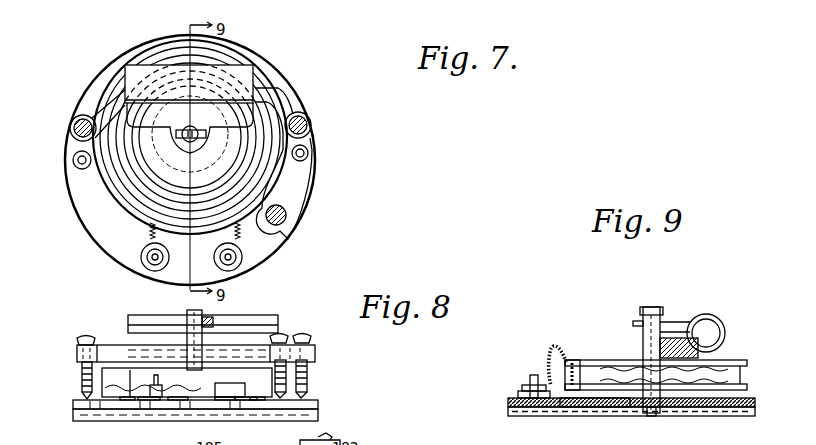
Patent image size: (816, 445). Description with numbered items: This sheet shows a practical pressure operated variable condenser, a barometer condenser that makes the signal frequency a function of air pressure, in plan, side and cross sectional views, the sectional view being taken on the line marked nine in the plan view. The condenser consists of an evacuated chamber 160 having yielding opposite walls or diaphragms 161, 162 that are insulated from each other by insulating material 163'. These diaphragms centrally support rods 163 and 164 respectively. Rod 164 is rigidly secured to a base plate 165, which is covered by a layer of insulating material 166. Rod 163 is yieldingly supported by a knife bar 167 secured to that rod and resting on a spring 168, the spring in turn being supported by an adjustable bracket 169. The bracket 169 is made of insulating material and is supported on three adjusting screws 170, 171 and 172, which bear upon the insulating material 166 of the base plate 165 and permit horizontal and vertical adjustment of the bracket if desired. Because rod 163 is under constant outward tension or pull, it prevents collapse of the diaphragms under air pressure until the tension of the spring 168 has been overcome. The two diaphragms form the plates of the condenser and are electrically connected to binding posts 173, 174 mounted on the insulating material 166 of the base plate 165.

In FIG. 9, the evacuated chamber 160 is at (578, 357).
In FIG. 7, the diaphragm 161 is at (124, 175).
In FIG. 9, the diaphragm 161 is at (610, 360).
In FIG. 9, the diaphragm 162 is at (600, 407).
In FIG. 7, the rod 163 is at (190, 142).
In FIG. 8, the rod 163 is at (171, 334).
In FIG. 9, the rod 163 is at (663, 348).
In FIG. 8, the insulating material 163' is at (152, 385).
In FIG. 9, the insulating material 163' is at (700, 371).
In FIG. 9, the rod 164 is at (651, 413).
In FIG. 8, the base plate 165 is at (320, 413).
In FIG. 9, the base plate 165 is at (510, 413).
In FIG. 7, the insulating material 166 is at (305, 183).
In FIG. 8, the insulating material 166 is at (320, 402).
In FIG. 9, the insulating material 166 is at (508, 402).
In FIG. 7, the knife bar 167 is at (199, 146).
In FIG. 8, the knife bar 167 is at (214, 316).
In FIG. 9, the knife bar 167 is at (640, 316).
In FIG. 7, the spring 168 is at (244, 61).
In FIG. 8, the spring 168 is at (260, 306).
In FIG. 9, the spring 168 is at (709, 314).
In FIG. 7, the adjustable bracket 169 is at (277, 102).
In FIG. 8, the adjustable bracket 169 is at (320, 350).
In FIG. 9, the adjustable bracket 169 is at (700, 350).
In FIG. 7, the adjusting screw 170 is at (70, 129).
In FIG. 8, the adjusting screw 170 is at (80, 375).
In FIG. 7, the adjusting screw 171 is at (309, 124).
In FIG. 8, the adjusting screw 171 is at (290, 370).
In FIG. 7, the adjusting screw 172 is at (287, 220).
In FIG. 8, the adjusting screw 172 is at (300, 385).
In FIG. 7, the binding post 173 is at (141, 262).
In FIG. 8, the binding post 173 is at (148, 403).
In FIG. 7, the binding post 174 is at (242, 261).
In FIG. 8, the binding post 174 is at (245, 403).
In FIG. 9, the binding post 174 is at (530, 392).